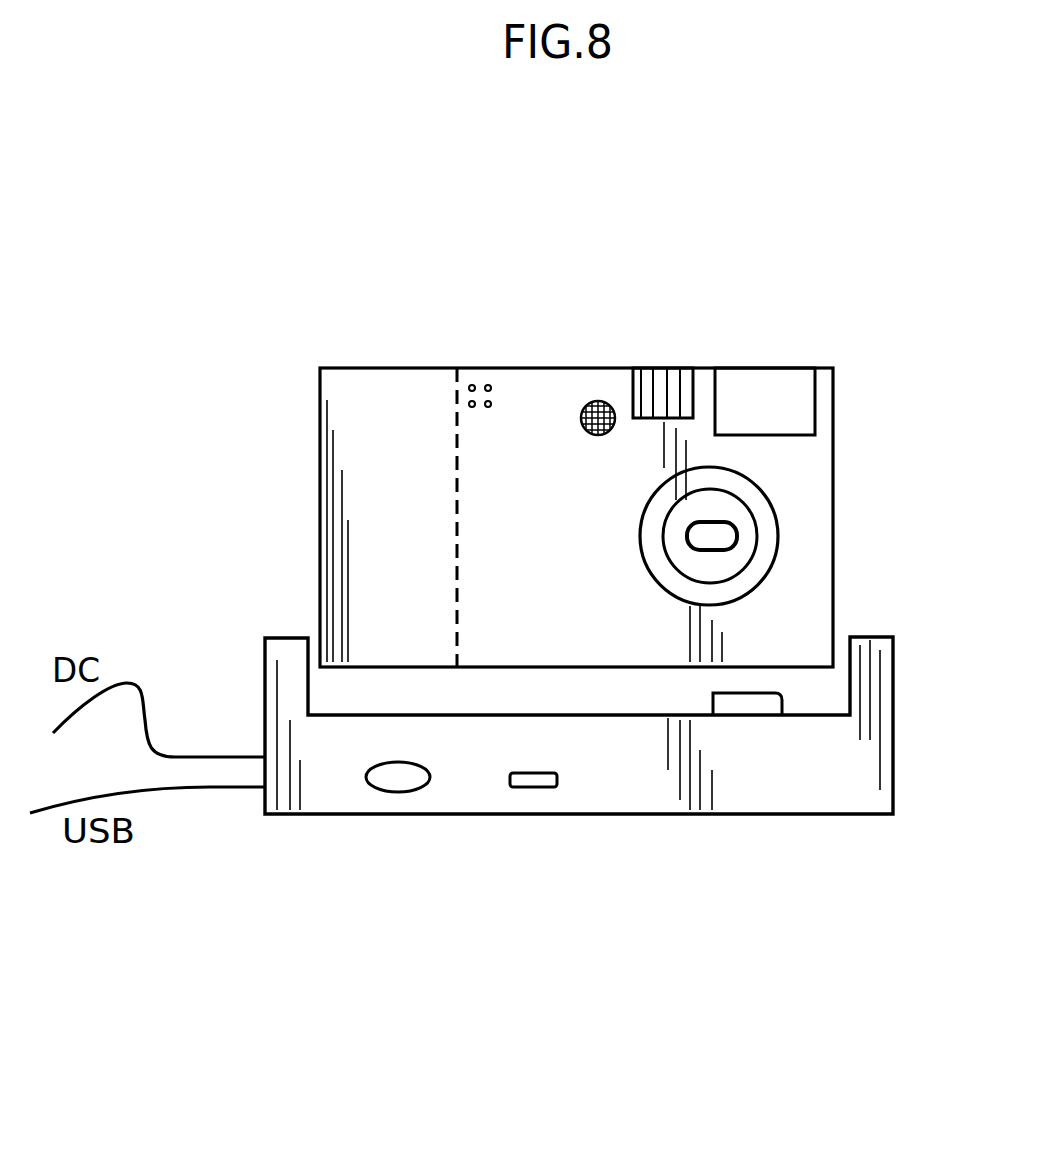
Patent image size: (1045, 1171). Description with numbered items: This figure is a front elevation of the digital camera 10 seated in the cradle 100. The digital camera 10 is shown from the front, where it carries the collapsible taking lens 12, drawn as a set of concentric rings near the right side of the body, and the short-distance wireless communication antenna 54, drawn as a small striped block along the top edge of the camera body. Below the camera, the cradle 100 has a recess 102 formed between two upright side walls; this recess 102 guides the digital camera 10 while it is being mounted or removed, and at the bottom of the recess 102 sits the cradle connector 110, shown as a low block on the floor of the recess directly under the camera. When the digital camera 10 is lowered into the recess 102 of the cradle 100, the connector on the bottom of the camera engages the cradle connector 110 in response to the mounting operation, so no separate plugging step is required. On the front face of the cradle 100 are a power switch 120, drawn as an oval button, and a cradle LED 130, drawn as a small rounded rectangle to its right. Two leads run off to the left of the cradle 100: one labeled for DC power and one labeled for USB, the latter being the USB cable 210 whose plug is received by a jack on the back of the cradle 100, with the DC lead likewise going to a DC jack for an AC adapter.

The digital camera 10 is at (839, 296).
The collapsible taking lens 12 is at (703, 535).
The short-distance wireless communication antenna 54 is at (663, 368).
The cradle 100 is at (719, 828).
The recess 102 is at (845, 660).
The cradle connector 110 is at (783, 702).
The power switch 120 is at (400, 780).
The cradle LED 130 is at (533, 787).
The USB cable 210 is at (210, 790).